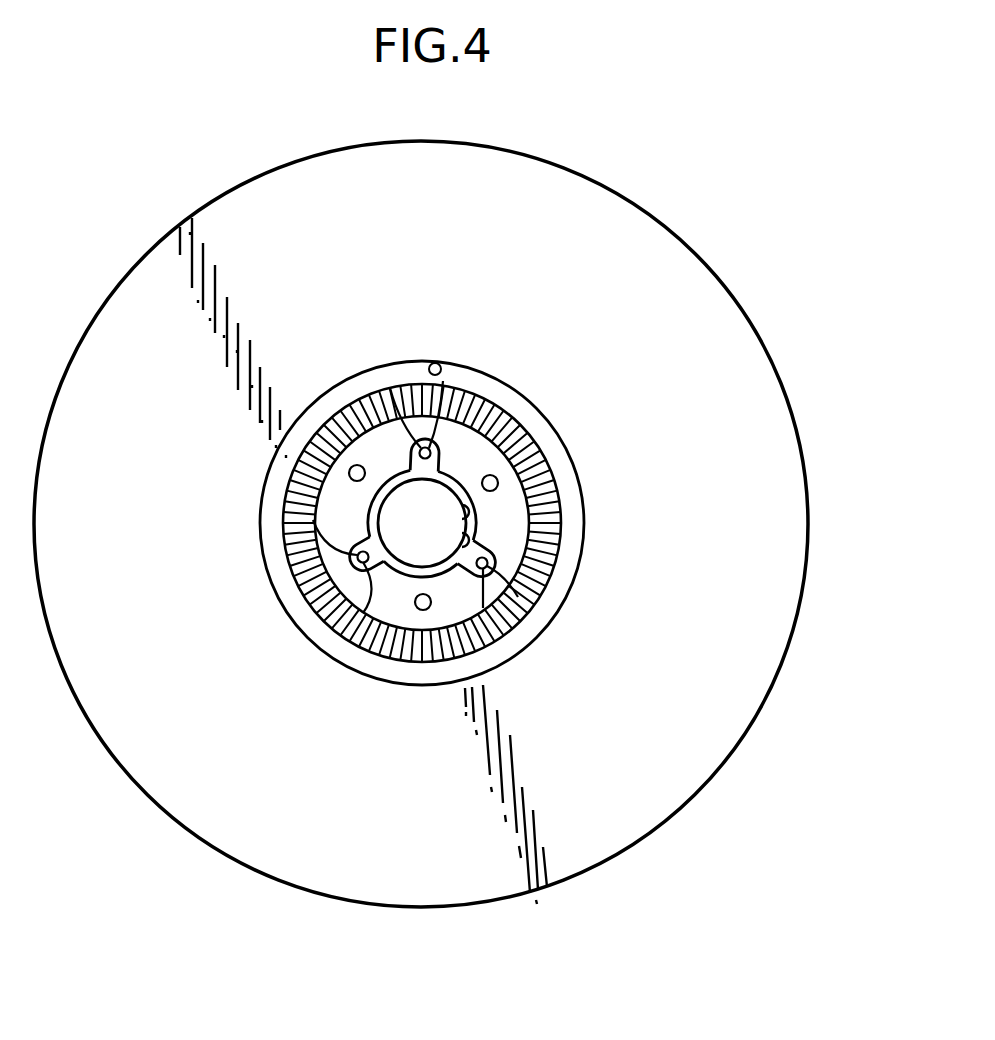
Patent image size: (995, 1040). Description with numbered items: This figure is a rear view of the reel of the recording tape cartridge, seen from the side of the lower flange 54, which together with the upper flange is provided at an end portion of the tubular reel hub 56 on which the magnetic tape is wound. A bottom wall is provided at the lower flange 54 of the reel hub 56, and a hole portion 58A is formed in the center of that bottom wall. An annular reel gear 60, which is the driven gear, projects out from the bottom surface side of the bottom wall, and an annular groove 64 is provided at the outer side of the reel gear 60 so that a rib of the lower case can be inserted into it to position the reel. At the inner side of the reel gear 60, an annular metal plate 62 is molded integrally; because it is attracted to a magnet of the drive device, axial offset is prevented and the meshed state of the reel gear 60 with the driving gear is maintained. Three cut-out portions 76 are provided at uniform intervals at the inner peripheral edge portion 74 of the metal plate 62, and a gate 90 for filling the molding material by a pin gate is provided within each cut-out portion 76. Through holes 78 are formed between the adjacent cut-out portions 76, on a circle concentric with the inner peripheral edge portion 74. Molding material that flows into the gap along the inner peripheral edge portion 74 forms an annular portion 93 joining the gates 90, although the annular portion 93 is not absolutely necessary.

The lower flange 54 is at (745, 362).
The reel hub 56 is at (719, 271).
The hole portion 58A is at (470, 540).
The reel gear 60 is at (480, 460).
The metal plate 62 is at (503, 446).
The annular groove 64 is at (441, 365).
The inner peripheral edge portion 74 is at (470, 513).
The cut-out portions 76 is at (433, 447).
The through holes 78 is at (349, 473).
The gate 90 is at (390, 390).
The annular portion 93 is at (368, 514).